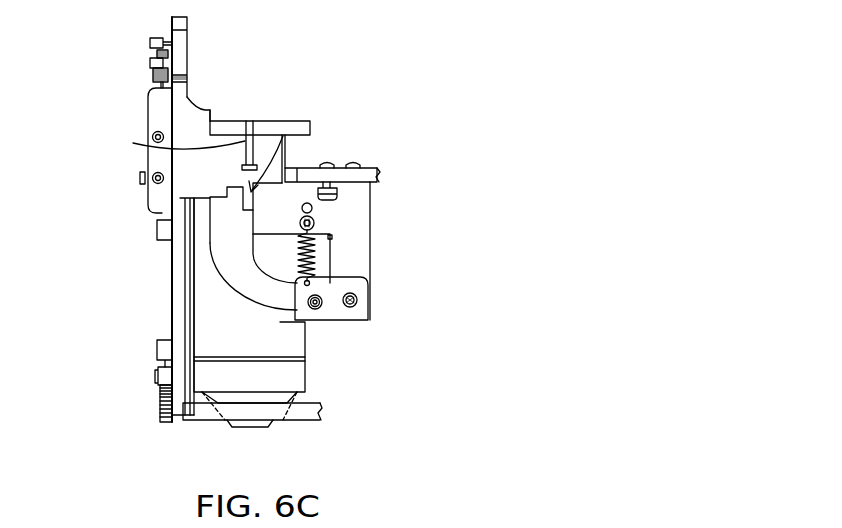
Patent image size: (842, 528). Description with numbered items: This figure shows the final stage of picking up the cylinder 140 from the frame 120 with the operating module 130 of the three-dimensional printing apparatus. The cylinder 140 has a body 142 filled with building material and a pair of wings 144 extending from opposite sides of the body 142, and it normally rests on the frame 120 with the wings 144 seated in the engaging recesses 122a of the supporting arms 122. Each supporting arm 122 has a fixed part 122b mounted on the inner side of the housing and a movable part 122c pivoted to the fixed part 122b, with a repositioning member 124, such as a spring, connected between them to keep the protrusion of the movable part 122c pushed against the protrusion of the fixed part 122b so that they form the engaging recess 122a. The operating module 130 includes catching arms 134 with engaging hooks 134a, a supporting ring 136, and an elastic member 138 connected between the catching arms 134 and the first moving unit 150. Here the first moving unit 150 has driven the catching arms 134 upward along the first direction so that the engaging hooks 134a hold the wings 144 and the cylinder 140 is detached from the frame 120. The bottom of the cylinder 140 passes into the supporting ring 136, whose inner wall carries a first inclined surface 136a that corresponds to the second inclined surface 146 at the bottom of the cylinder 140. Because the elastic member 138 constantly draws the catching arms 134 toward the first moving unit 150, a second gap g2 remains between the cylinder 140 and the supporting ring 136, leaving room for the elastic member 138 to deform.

The frame 120 is at (339, 235).
The supporting arm 122 is at (440, 189).
The engaging recess 122a is at (285, 130).
The fixed part 122b is at (348, 218).
The movable part 122c is at (218, 283).
The repositioning member 124 is at (315, 256).
The operating module 130 is at (96, 240).
The catching arm 134 is at (160, 107).
The engaging hook 134a is at (248, 121).
The supporting ring 136 is at (305, 410).
The first inclined surface 136a is at (272, 409).
The elastic member 138 is at (154, 72).
The cylinder 140 is at (97, 128).
The body 142 is at (200, 233).
The wings 144 is at (150, 145).
The second inclined surface 146 is at (310, 398).
The first moving unit 150 is at (181, 42).
The second gap g2 is at (192, 403).